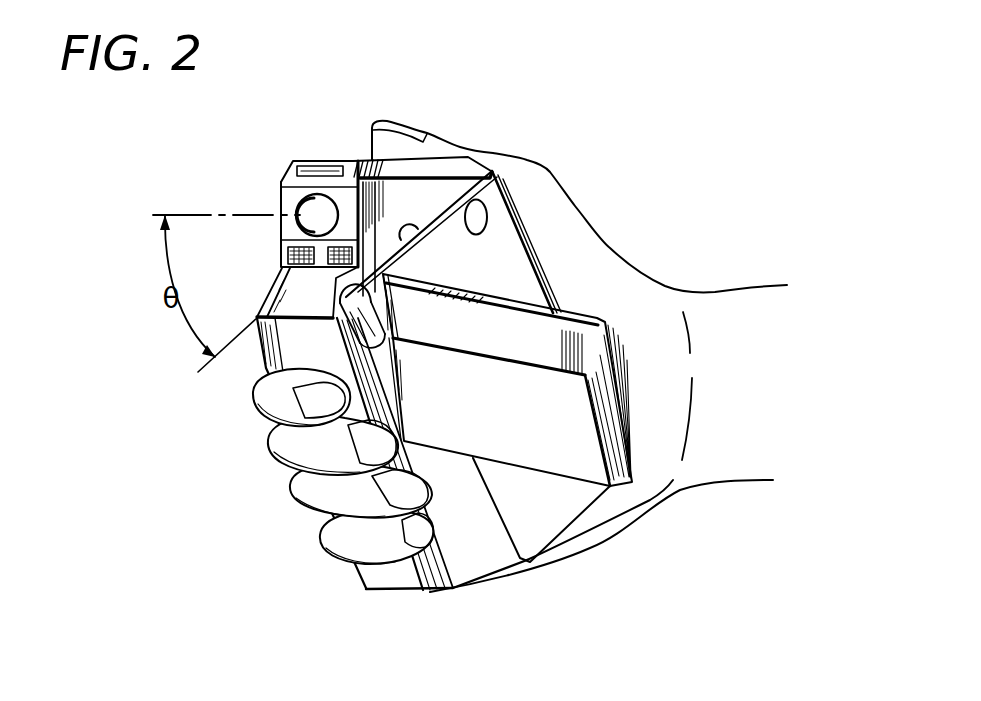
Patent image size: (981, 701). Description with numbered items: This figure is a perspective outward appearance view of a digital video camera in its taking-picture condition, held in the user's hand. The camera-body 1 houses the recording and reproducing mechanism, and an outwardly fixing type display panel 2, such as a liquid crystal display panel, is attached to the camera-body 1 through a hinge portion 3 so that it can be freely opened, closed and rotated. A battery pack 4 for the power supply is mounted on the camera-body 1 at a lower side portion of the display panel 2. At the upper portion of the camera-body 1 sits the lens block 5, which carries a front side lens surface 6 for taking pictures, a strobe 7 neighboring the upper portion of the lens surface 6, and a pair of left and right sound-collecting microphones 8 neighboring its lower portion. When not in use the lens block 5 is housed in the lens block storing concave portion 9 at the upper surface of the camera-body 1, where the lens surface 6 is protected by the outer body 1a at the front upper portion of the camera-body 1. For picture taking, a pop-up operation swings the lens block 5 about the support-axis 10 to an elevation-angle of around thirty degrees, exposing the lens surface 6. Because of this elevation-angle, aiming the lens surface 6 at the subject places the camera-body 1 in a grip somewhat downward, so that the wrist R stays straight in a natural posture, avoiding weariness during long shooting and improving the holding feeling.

The camera-body 1 is at (413, 563).
The outer body 1a is at (256, 340).
The display panel 2 is at (571, 440).
The hinge portion 3 is at (388, 384).
The battery pack 4 is at (543, 507).
The lens block 5 is at (392, 188).
The lens surface 6 is at (316, 203).
The strobe 7 is at (328, 167).
The sound-collecting microphones 8 is at (288, 255).
The lens block storing concave portion 9 is at (420, 231).
The support-axis 10 is at (481, 217).
The wrist R is at (718, 291).